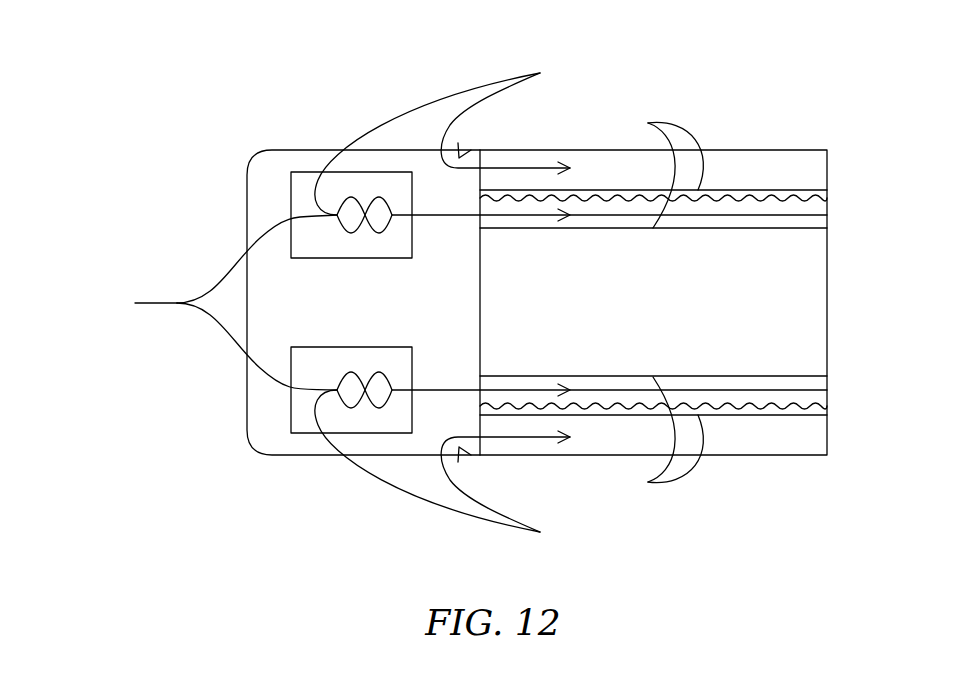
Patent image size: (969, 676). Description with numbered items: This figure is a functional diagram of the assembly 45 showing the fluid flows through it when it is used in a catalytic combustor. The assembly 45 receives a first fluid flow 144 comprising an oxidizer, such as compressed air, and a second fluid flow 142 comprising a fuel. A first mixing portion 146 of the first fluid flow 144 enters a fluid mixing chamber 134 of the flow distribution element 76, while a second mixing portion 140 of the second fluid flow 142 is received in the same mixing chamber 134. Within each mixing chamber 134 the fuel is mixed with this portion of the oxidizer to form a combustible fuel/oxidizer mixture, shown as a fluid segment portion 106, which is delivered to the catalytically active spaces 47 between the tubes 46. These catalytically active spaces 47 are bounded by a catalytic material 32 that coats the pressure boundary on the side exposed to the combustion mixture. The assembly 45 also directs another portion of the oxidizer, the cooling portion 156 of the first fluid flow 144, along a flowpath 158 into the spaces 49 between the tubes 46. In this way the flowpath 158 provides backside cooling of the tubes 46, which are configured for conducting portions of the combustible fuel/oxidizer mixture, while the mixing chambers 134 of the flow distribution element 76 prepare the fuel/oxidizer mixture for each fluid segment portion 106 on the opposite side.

The assembly 45 is at (215, 84).
The flow distribution element 76 is at (257, 162).
The fluid mixing chamber 134 is at (291, 195).
The second mixing portion 140 is at (228, 273).
The second fluid flow 142 is at (152, 303).
The fluid segment portion 106 is at (446, 220).
The first mixing portion 146 is at (415, 108).
The first fluid flow 144 is at (533, 75).
The cooling portion 156 is at (455, 120).
The flowpath 158 is at (459, 158).
The spaces 49 is at (807, 175).
The catalytically active spaces 47 is at (807, 215).
The catalytic material 32 is at (745, 198).
The tubes 46 is at (655, 302).